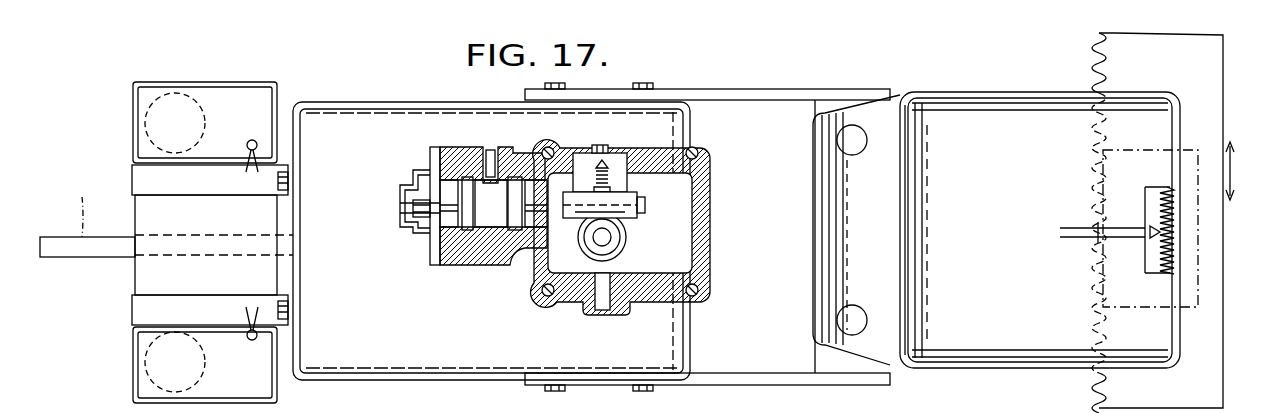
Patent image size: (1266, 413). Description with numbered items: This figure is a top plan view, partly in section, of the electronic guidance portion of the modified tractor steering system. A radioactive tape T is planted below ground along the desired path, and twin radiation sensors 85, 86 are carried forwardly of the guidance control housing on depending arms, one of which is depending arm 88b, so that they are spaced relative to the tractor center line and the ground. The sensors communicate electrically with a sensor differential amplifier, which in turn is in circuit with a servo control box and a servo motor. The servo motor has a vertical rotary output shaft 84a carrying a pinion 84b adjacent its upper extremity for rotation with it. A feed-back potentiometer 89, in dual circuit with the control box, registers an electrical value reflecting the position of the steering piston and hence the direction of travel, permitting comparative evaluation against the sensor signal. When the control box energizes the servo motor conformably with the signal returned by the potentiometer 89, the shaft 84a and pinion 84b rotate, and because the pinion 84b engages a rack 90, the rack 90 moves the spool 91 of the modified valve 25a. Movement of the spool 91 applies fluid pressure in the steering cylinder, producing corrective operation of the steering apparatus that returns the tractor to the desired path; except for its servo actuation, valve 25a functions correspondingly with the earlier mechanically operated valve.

The radioactive tape T is at (74, 206).
The modified valve 25a is at (452, 147).
The vertical rotary output shaft 84a is at (593, 238).
The pinion 84b is at (626, 240).
The radiation sensor 85 is at (147, 350).
The radiation sensor 86 is at (143, 128).
The depending arm 88b is at (290, 412).
The feed-back potentiometer 89 is at (1200, 233).
The rack 90 is at (650, 183).
The spool 91 is at (481, 203).